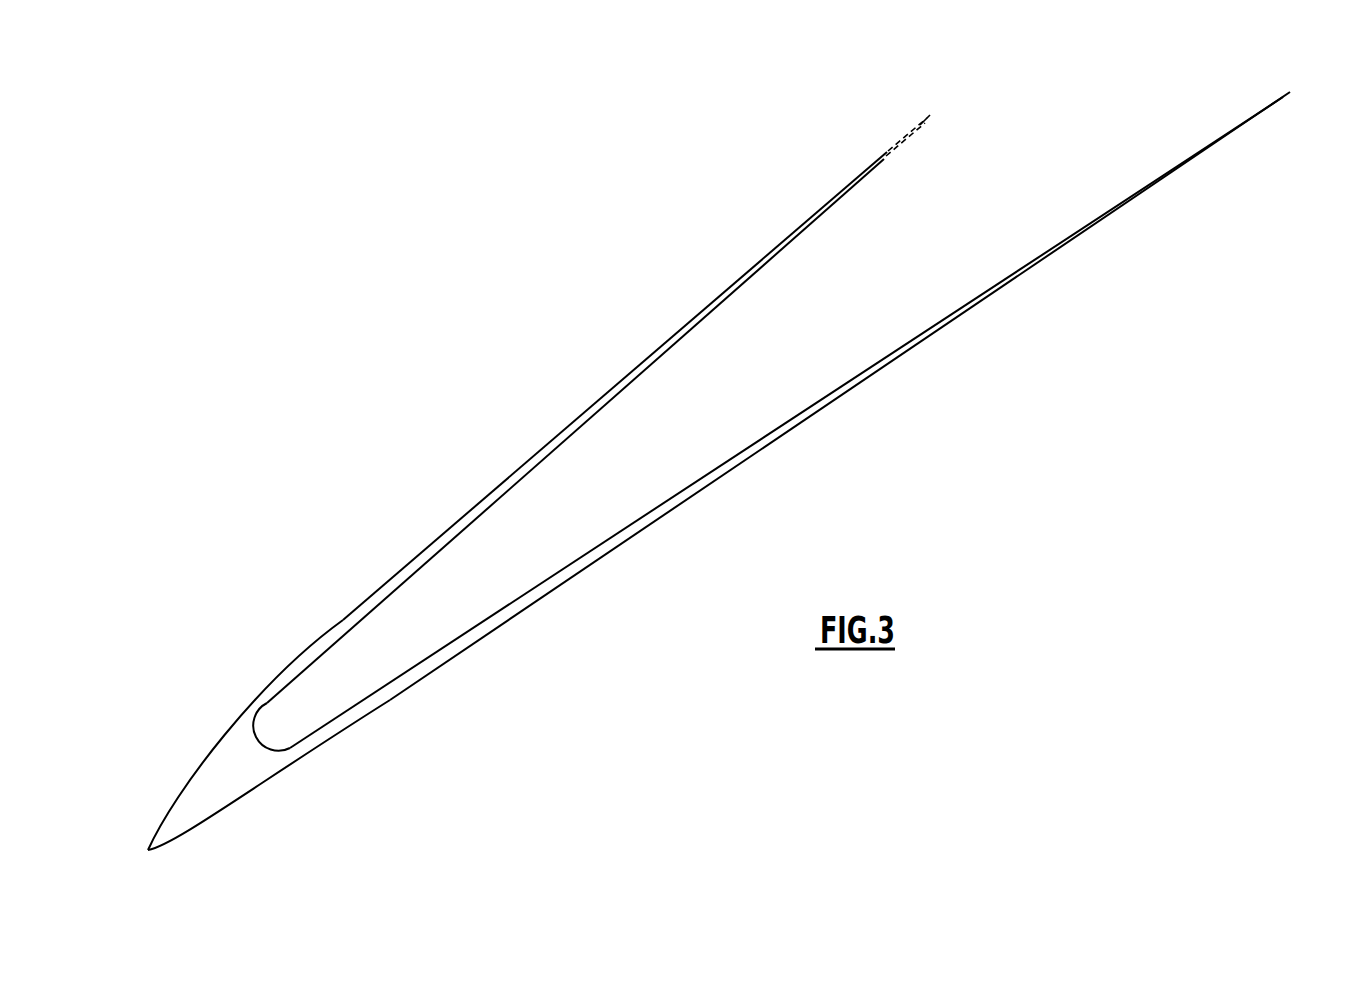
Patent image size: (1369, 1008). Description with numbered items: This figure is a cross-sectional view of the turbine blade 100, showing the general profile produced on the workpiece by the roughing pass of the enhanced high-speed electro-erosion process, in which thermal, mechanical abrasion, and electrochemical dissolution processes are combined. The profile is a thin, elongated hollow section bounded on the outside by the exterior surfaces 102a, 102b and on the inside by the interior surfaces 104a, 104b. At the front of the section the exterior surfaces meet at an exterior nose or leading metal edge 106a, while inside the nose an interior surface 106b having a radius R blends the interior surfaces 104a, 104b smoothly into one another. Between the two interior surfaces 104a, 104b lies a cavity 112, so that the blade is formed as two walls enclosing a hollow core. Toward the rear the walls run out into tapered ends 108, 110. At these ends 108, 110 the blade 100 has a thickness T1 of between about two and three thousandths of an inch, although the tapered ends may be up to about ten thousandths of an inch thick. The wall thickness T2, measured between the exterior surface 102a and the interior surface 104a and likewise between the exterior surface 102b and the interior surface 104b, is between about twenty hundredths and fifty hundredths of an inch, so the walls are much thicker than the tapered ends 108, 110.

The turbine blade 100 is at (390, 385).
The exterior surface 102a is at (637, 367).
The exterior surface 102b is at (642, 531).
The interior surface 104a is at (690, 331).
The interior surface 104b is at (618, 532).
The exterior nose or leading metal edge 106a is at (150, 851).
The interior surface 106b is at (260, 708).
The tapered end 108 is at (888, 154).
The tapered end 110 is at (1290, 92).
The cavity 112 is at (857, 325).
The thickness T1 is at (902, 93).
The thickness T2 is at (762, 315).
The radius R is at (263, 737).